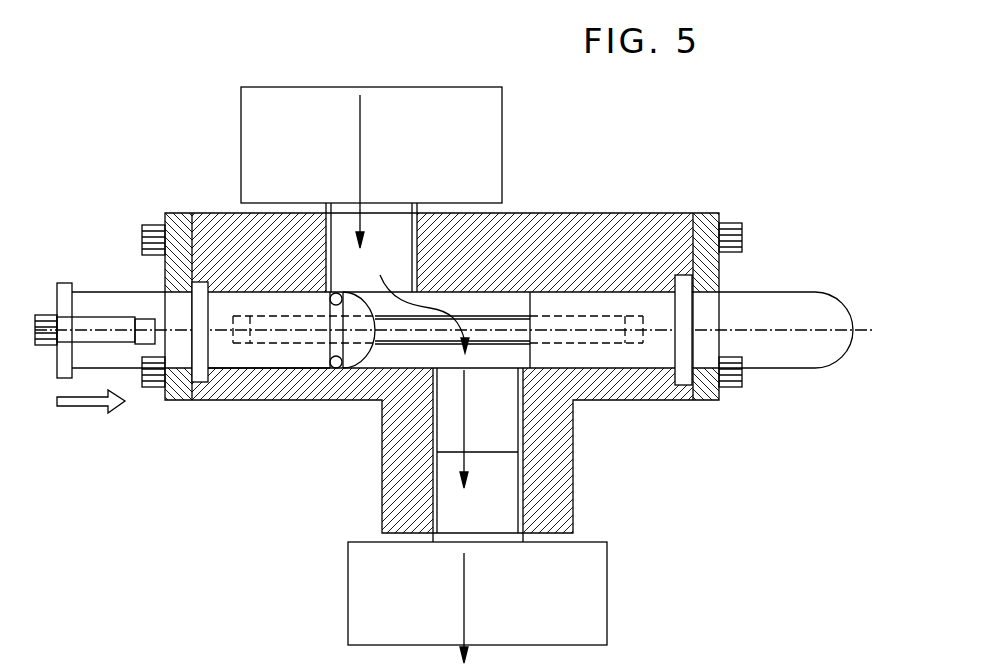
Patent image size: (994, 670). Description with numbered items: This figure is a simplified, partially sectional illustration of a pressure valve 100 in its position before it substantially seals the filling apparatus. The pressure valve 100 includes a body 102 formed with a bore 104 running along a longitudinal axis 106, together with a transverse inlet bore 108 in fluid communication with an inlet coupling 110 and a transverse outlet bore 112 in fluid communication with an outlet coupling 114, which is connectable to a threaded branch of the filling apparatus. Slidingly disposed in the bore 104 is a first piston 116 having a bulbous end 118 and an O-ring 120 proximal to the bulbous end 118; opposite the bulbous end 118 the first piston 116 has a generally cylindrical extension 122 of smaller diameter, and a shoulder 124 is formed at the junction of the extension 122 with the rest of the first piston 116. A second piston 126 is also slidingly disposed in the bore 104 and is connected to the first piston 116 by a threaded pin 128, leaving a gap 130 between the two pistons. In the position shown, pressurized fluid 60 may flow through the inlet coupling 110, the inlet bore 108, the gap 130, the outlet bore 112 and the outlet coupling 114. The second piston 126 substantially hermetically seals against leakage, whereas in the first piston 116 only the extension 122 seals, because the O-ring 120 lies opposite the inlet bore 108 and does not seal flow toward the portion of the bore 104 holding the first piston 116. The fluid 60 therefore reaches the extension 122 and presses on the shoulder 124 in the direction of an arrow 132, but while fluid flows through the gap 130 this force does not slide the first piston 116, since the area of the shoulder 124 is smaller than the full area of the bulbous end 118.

The pressurized fluid 60 is at (360, 142).
The pressure valve 100 is at (442, 339).
The body 102 is at (597, 228).
The bore 104 is at (520, 294).
The longitudinal axis 106 is at (869, 328).
The transverse inlet bore 108 is at (350, 222).
The inlet coupling 110 is at (284, 91).
The transverse outlet bore 112 is at (497, 410).
The outlet coupling 114 is at (593, 585).
The first piston 116 is at (282, 358).
The bulbous end 118 is at (363, 357).
The O-ring 120 is at (337, 363).
The cylindrical extension 122 is at (97, 300).
The shoulder 124 is at (207, 295).
The second piston 126 is at (762, 291).
The threaded pin 128 is at (487, 322).
The gap 130 is at (452, 300).
The arrow 132 is at (98, 408).